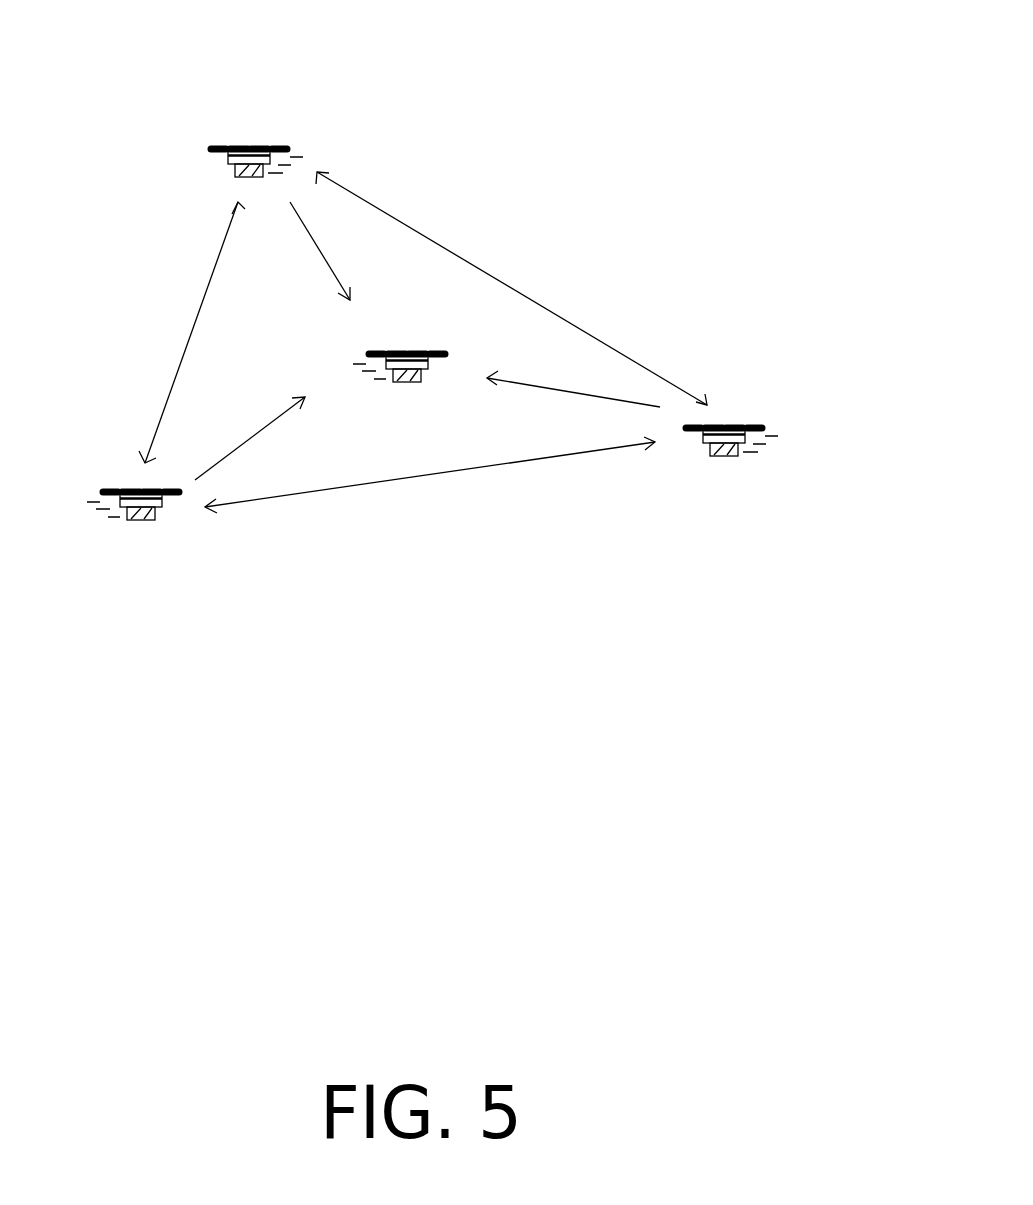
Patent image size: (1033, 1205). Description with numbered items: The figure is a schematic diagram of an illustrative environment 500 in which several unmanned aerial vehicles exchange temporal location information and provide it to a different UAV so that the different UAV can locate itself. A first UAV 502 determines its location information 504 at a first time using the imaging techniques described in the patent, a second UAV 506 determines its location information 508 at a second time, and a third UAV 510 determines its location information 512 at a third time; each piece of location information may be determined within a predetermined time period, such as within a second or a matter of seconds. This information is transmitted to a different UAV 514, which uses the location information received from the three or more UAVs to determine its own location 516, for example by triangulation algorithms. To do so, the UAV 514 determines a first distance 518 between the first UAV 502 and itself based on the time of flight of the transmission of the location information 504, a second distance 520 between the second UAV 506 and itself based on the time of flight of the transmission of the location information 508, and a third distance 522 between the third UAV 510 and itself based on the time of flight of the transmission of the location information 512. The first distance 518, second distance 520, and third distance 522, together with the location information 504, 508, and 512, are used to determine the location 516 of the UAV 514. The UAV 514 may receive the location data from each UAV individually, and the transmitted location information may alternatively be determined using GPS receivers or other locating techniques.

The environment 500 is at (617, 70).
The first UAV 502 is at (287, 148).
The location information 504 is at (320, 68).
The second UAV 506 is at (110, 490).
The location information 508 is at (207, 566).
The third UAV 510 is at (762, 427).
The location information 512 is at (800, 520).
The UAV 514 is at (445, 353).
The location 516 is at (460, 420).
The first distance 518 is at (327, 263).
The second distance 520 is at (548, 390).
The third distance 522 is at (268, 423).